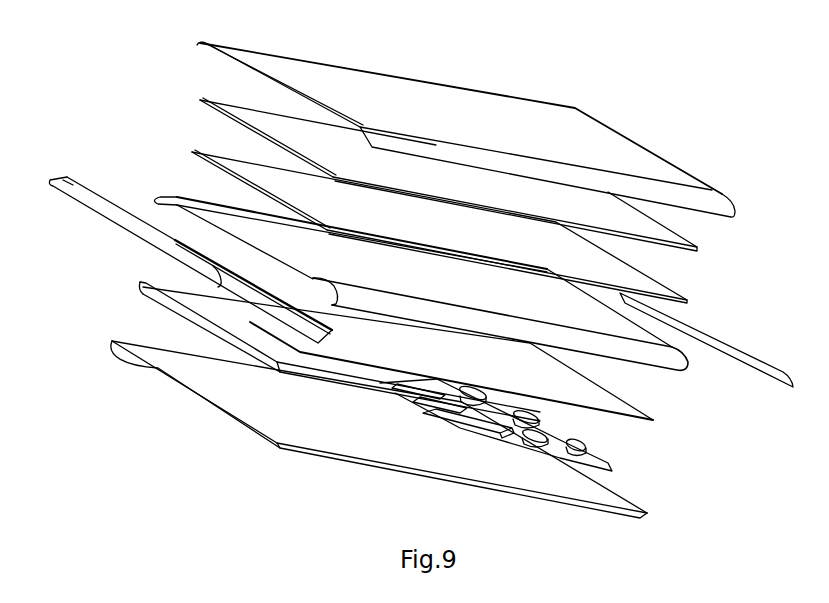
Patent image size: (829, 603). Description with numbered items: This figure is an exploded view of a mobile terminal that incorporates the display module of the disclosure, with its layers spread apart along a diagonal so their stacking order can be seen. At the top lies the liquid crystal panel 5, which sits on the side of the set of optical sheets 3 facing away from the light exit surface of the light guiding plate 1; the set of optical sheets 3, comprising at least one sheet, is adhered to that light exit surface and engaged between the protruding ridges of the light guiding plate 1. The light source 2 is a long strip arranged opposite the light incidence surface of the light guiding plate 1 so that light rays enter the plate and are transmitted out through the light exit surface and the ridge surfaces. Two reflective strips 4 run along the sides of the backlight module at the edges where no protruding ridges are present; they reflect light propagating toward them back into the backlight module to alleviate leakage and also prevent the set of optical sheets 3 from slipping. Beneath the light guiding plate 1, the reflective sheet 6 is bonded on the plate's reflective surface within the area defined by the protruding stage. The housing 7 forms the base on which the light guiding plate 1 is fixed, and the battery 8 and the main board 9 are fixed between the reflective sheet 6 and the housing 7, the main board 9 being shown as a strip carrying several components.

The light guiding plate 1 is at (171, 197).
The light source 2 is at (280, 300).
The set of optical sheets 3 is at (698, 248).
The reflective strips 4 is at (60, 177).
The liquid crystal panel 5 is at (660, 173).
The reflective sheet 6 is at (607, 402).
The housing 7 is at (215, 420).
The battery 8 is at (138, 287).
The main board 9 is at (583, 455).